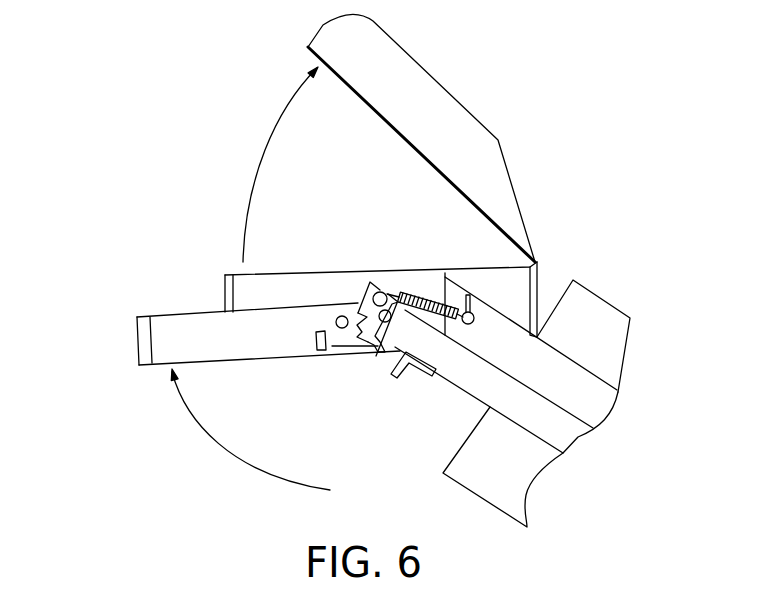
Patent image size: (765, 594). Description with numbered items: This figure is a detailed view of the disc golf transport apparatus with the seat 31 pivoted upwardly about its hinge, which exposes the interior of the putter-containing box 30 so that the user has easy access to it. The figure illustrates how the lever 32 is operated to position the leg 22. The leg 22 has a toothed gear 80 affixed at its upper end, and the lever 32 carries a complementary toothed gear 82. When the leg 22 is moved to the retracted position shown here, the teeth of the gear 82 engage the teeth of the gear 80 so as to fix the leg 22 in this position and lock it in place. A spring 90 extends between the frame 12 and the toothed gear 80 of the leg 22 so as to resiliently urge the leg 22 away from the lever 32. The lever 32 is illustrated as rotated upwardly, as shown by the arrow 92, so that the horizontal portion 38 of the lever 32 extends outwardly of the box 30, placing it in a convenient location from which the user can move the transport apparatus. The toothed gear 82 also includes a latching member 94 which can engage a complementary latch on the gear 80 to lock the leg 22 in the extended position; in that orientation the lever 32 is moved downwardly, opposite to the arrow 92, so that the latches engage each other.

The frame 12 is at (607, 403).
The leg 22 is at (470, 383).
The box 30 is at (225, 300).
The seat 31 is at (435, 97).
The lever 32 is at (237, 361).
The horizontal portion 38 is at (137, 342).
The toothed gear 80 is at (379, 357).
The toothed gear 82 is at (336, 312).
The spring 90 is at (418, 300).
The arrow 92 is at (245, 464).
The latching member 94 is at (335, 356).